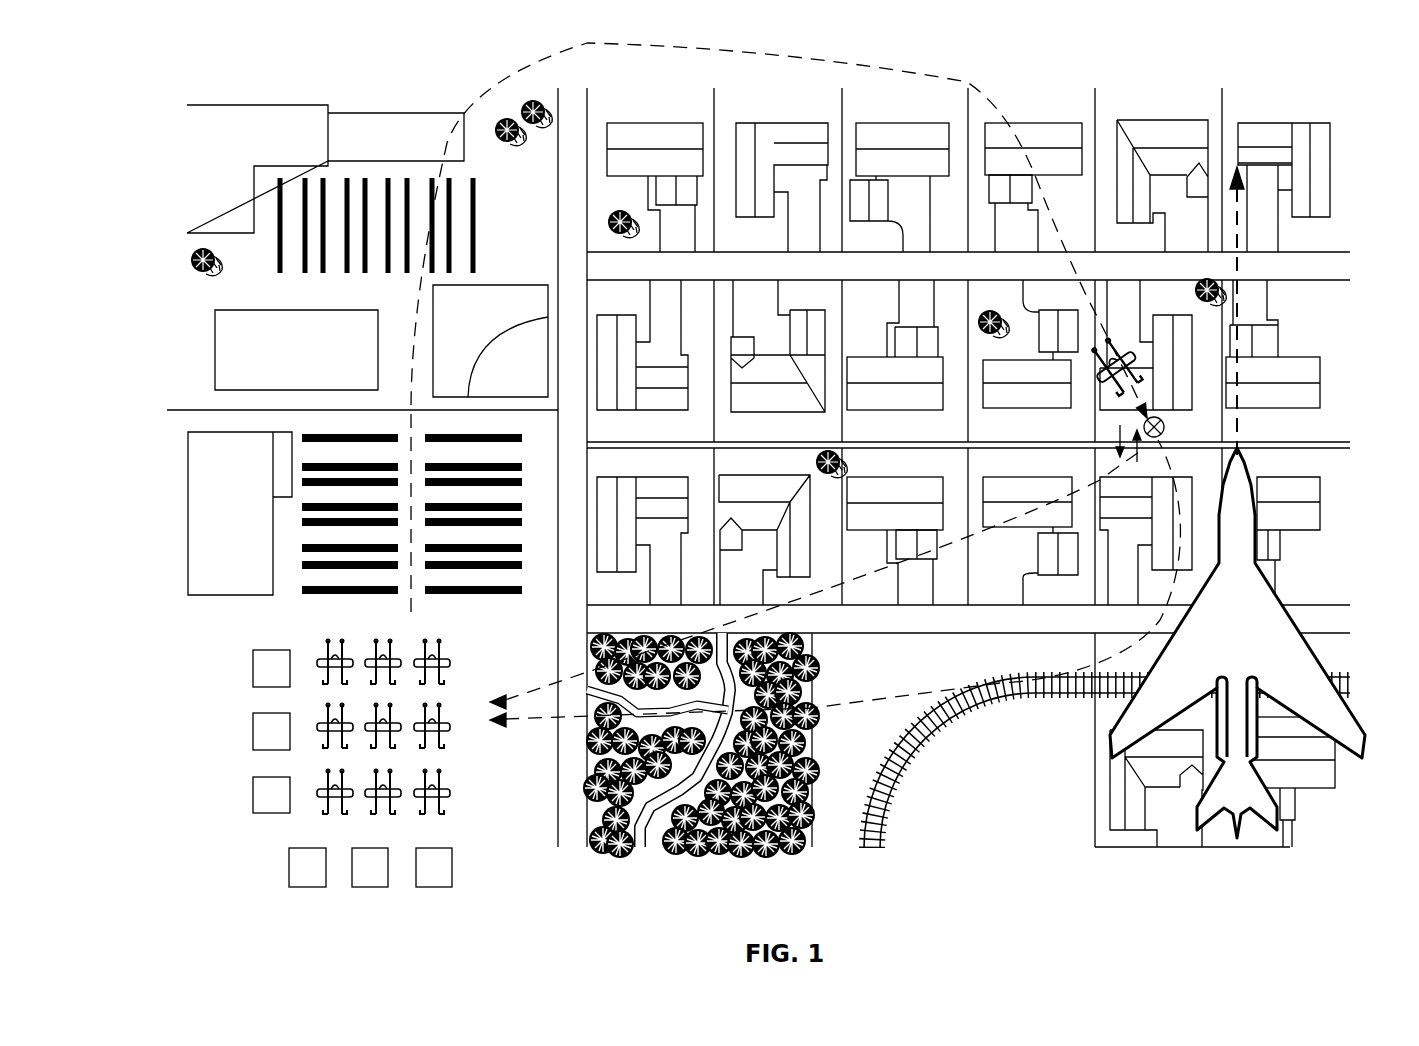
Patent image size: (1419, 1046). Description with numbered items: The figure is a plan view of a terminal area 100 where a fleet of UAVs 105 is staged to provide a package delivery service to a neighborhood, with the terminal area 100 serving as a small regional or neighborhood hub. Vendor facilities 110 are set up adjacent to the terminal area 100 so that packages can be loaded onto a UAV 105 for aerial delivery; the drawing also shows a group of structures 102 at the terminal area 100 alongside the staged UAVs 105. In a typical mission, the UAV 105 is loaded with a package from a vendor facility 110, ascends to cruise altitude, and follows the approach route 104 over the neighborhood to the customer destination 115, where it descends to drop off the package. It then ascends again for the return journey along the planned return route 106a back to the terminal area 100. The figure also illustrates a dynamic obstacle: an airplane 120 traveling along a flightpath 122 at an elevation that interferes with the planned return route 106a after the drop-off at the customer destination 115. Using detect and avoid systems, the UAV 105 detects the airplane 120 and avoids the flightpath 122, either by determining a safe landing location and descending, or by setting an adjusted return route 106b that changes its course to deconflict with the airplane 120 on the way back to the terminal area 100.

The terminal area 100 is at (243, 852).
The base station 102 is at (253, 725).
The approach route 104 is at (1005, 102).
The UAV 105 is at (448, 663).
The planned return route 106a is at (872, 702).
The adjusted return route 106b is at (955, 548).
The vendor facility 110 is at (370, 880).
The customer destination 115 is at (1165, 428).
The airplane 120 is at (1253, 590).
The flightpath 122 is at (1243, 369).